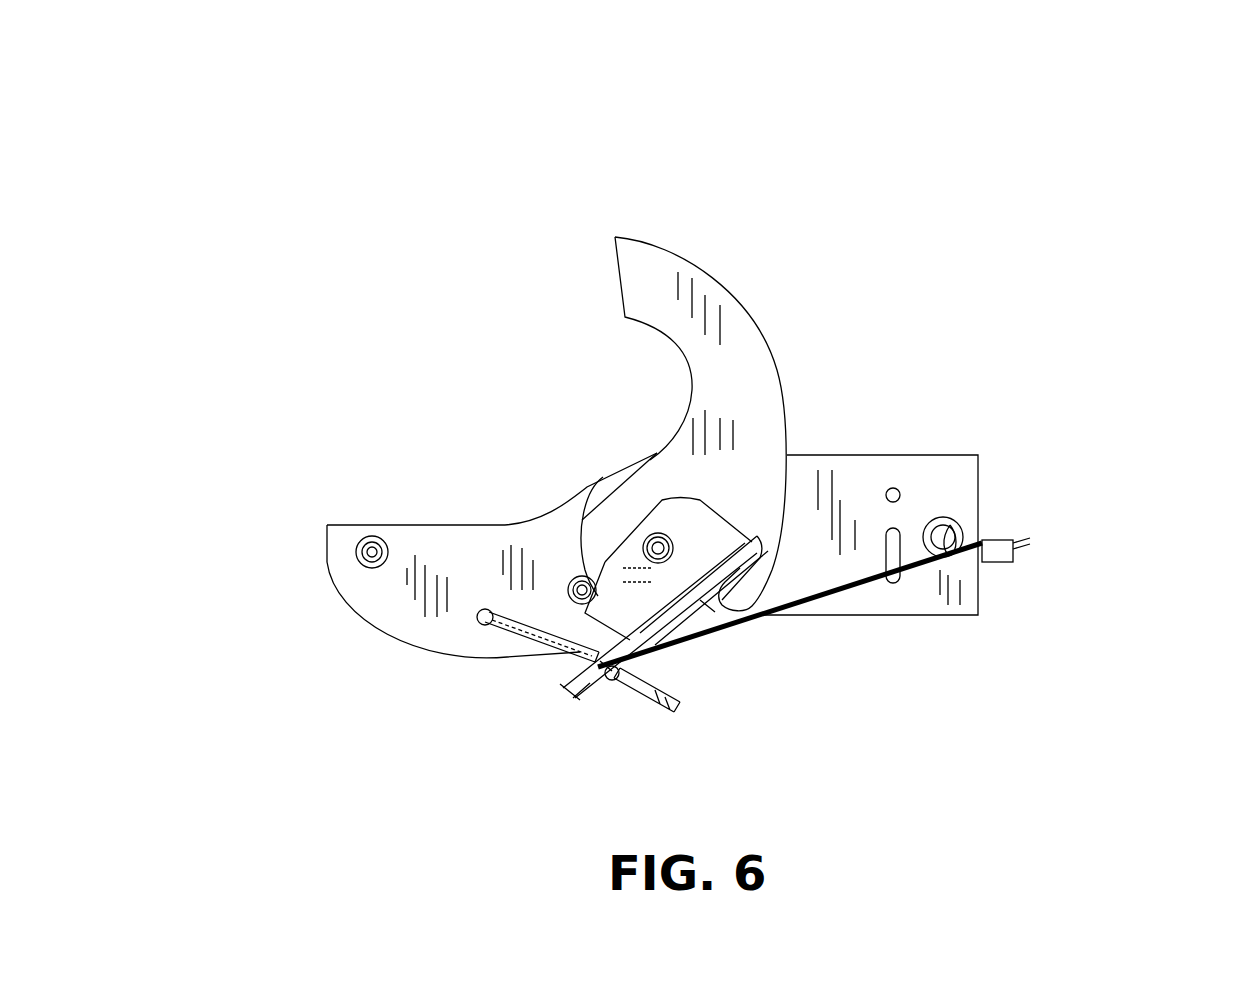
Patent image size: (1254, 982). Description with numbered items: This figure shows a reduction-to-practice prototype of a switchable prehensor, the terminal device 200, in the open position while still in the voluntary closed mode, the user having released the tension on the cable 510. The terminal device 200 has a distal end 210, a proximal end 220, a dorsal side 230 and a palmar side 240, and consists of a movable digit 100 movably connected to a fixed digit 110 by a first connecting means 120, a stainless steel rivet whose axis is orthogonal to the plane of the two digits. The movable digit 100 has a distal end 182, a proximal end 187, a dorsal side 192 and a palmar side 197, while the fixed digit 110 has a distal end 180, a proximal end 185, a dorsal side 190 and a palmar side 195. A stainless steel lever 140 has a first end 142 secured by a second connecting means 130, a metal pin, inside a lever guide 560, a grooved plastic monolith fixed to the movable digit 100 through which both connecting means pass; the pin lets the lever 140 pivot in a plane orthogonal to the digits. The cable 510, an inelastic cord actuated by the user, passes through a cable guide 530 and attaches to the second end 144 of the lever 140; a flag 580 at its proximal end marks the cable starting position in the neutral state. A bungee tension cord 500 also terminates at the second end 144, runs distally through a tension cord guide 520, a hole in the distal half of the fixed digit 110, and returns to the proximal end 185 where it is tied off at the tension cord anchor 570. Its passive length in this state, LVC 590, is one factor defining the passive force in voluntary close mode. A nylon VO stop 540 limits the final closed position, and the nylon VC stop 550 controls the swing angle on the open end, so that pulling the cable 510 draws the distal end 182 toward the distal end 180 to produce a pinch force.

The movable digit 100 is at (615, 237).
The fixed digit 110 is at (387, 598).
The first connecting means 120 is at (657, 533).
The second connecting means 130 is at (720, 528).
The lever 140 is at (645, 605).
The first end of lever 142 is at (700, 545).
The second end of lever 144 is at (577, 690).
The distal end of fixed digit 180 is at (327, 548).
The distal end of movable digit 182 is at (667, 240).
The proximal end of fixed digit 185 is at (988, 522).
The proximal end of movable digit 187 is at (697, 645).
The dorsal side of fixed digit 190 is at (472, 505).
The dorsal side of movable digit 192 is at (795, 385).
The palmar side of fixed digit 195 is at (828, 620).
The palmar side of movable digit 197 is at (653, 375).
The terminal device 200 is at (395, 185).
The distal end of terminal device 210 is at (220, 462).
The proximal end of terminal device 220 is at (1120, 490).
The dorsal side of terminal device 230 is at (655, 150).
The palmar side of terminal device 240 is at (653, 737).
The tension cord 500 is at (513, 627).
The cable 510 is at (848, 590).
The tension cord guide 520 is at (477, 620).
The cable guide 530 is at (955, 525).
The voluntary open stop (VO stop) 540 is at (370, 536).
The voluntary close stop (VC stop) 550 is at (570, 578).
The lever guide 560 is at (747, 610).
The tension cord anchor 570 is at (905, 582).
The flag 580 is at (1000, 560).
The LVC (length) 590 is at (596, 641).